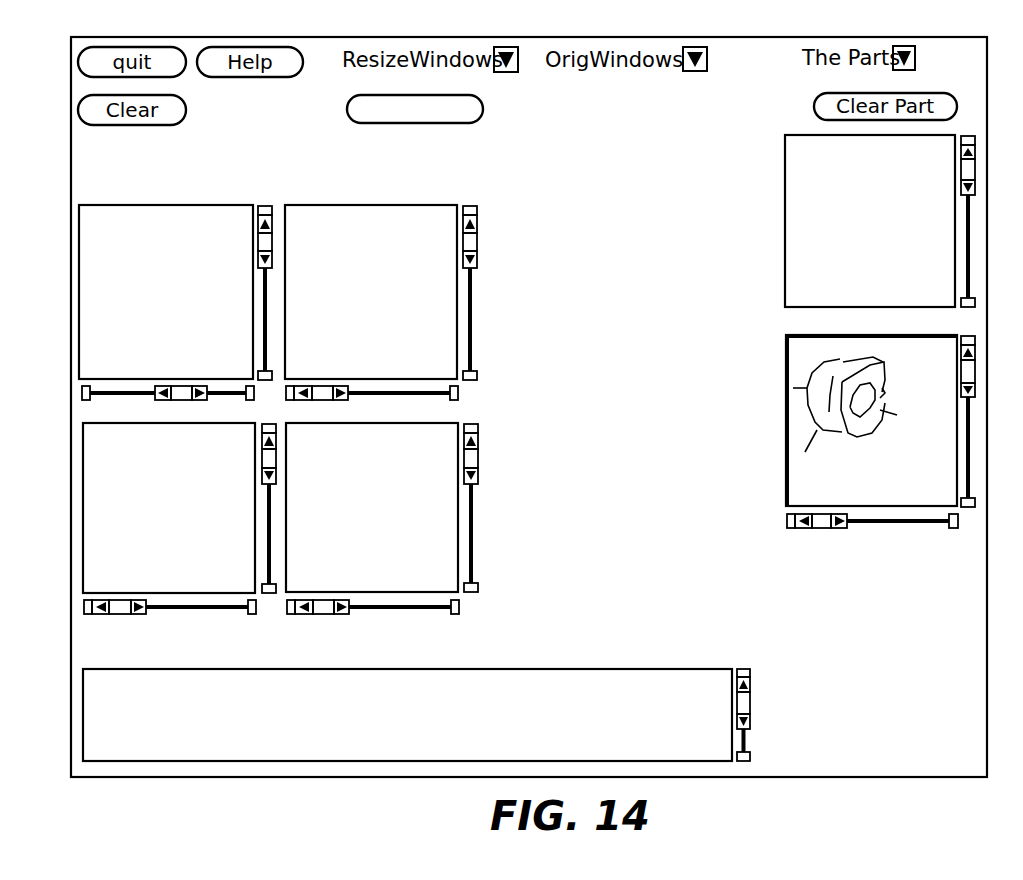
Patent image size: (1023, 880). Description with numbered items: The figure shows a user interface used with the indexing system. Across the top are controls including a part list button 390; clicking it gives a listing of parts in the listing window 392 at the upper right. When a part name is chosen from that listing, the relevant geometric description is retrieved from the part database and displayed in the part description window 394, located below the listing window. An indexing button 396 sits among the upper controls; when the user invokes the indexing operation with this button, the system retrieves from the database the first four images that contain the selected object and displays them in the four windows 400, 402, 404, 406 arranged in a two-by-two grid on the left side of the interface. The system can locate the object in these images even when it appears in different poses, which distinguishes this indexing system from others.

The part list button 390 is at (898, 36).
The listing window 392 is at (785, 200).
The part description window 394 is at (786, 362).
The indexing button 396 is at (483, 106).
The window 400 is at (232, 179).
The window 402 is at (426, 179).
The window 404 is at (168, 625).
The window 406 is at (371, 625).